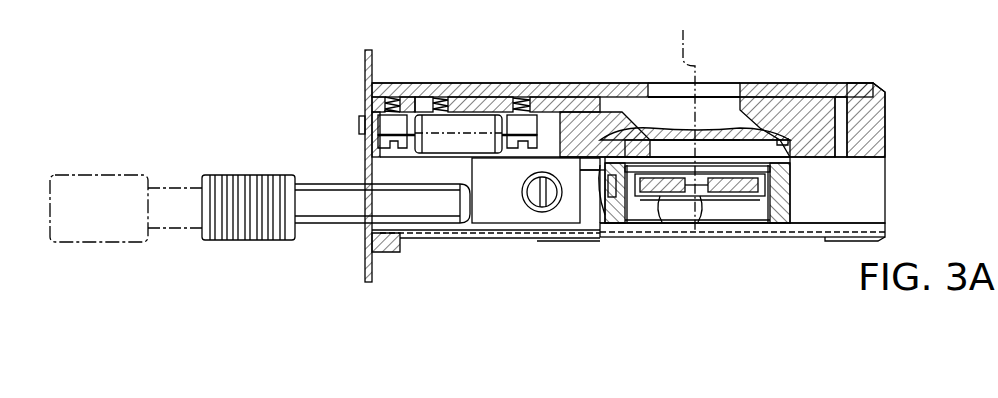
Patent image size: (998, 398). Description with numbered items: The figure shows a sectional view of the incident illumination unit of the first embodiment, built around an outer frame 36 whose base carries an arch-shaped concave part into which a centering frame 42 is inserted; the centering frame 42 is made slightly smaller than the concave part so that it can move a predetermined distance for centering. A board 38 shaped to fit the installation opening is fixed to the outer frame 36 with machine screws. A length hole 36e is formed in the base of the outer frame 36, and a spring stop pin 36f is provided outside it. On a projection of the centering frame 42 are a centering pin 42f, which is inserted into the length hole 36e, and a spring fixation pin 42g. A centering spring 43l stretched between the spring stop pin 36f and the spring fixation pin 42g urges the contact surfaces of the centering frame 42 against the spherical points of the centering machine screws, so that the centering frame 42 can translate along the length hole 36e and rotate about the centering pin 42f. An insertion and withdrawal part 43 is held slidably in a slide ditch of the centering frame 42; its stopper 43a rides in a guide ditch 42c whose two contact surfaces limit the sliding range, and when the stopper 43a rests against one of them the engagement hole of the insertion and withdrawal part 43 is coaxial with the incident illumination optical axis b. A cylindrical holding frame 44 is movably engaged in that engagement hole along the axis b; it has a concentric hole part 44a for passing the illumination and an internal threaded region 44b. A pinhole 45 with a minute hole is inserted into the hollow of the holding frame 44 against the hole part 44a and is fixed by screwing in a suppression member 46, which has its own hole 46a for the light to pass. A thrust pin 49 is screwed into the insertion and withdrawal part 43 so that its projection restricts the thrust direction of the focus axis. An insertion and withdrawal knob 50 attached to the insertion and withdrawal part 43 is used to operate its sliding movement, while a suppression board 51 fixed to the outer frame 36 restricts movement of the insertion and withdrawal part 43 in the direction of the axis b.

The outer frame 36 is at (885, 100).
The length hole 36e is at (482, 88).
The spring stop pin 36f is at (359, 125).
The board 38 is at (365, 62).
The centering frame 42 is at (602, 100).
The guide ditch 42c is at (745, 122).
The centering pin 42f is at (440, 83).
The spring fixation pin 42g is at (540, 96).
The insertion and withdrawal part 43 is at (492, 222).
The stopper 43a is at (800, 96).
The centering spring 43l is at (487, 98).
The holding frame 44 is at (780, 217).
The hole part 44a is at (750, 135).
The threaded region 44b is at (635, 200).
The pinhole 45 is at (728, 197).
The suppression member 46 is at (765, 205).
The hole 46a is at (690, 205).
The thrust pin 49 is at (552, 212).
The insertion and withdrawal knob 50 is at (258, 230).
The suppression board 51 is at (438, 240).
The incident illumination optical axis b is at (686, 117).